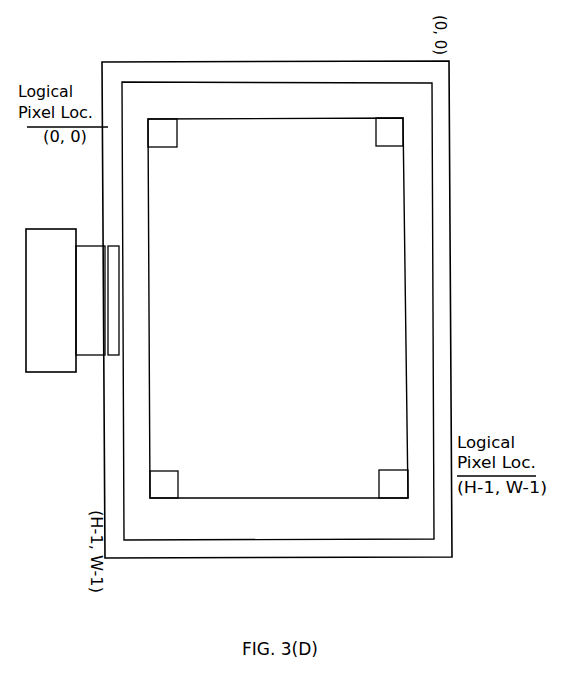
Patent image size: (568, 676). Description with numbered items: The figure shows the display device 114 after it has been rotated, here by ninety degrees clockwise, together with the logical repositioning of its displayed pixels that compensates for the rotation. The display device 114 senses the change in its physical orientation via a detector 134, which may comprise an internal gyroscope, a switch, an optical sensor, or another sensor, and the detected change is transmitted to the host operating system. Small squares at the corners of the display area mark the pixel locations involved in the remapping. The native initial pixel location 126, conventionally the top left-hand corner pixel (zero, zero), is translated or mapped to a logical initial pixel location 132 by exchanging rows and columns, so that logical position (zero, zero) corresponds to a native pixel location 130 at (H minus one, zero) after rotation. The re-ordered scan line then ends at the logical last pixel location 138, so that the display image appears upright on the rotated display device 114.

The display device 114 is at (220, 60).
The initial pixel location 126 is at (386, 117).
The last pixel location 130 is at (158, 500).
The logical initial pixel location 132 is at (148, 133).
The detector 134 is at (113, 253).
The logical last pixel location 138 is at (399, 498).